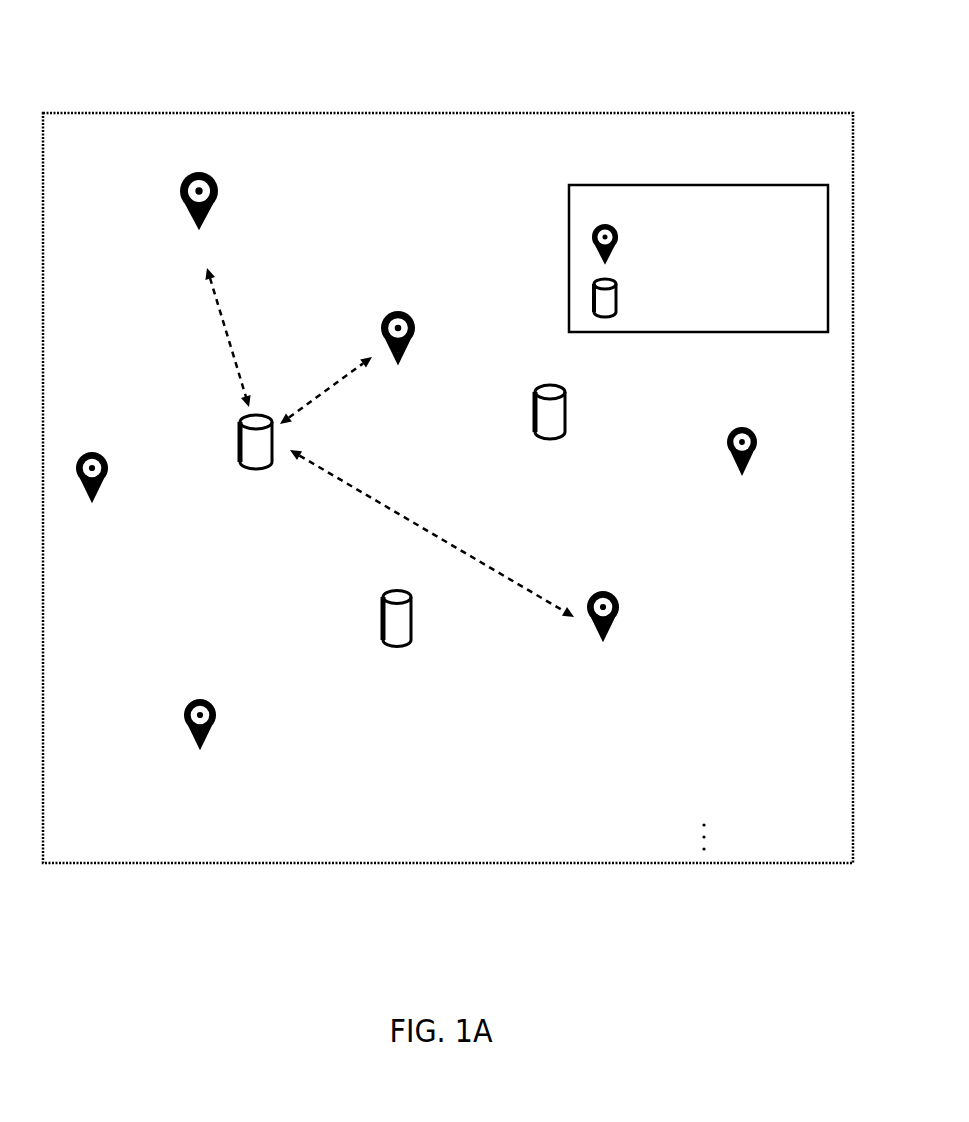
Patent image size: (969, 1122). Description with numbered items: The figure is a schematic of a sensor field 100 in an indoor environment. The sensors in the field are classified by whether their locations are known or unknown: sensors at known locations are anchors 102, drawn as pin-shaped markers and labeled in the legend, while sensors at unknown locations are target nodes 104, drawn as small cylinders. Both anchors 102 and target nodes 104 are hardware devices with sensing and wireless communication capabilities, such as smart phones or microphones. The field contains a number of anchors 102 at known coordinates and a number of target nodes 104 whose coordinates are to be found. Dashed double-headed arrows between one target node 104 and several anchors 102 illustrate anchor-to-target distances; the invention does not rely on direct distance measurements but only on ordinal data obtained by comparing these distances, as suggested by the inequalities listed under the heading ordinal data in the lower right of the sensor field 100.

The sensor field 100 is at (448, 436).
The anchor 102 is at (222, 200).
The target node 104 is at (535, 408).